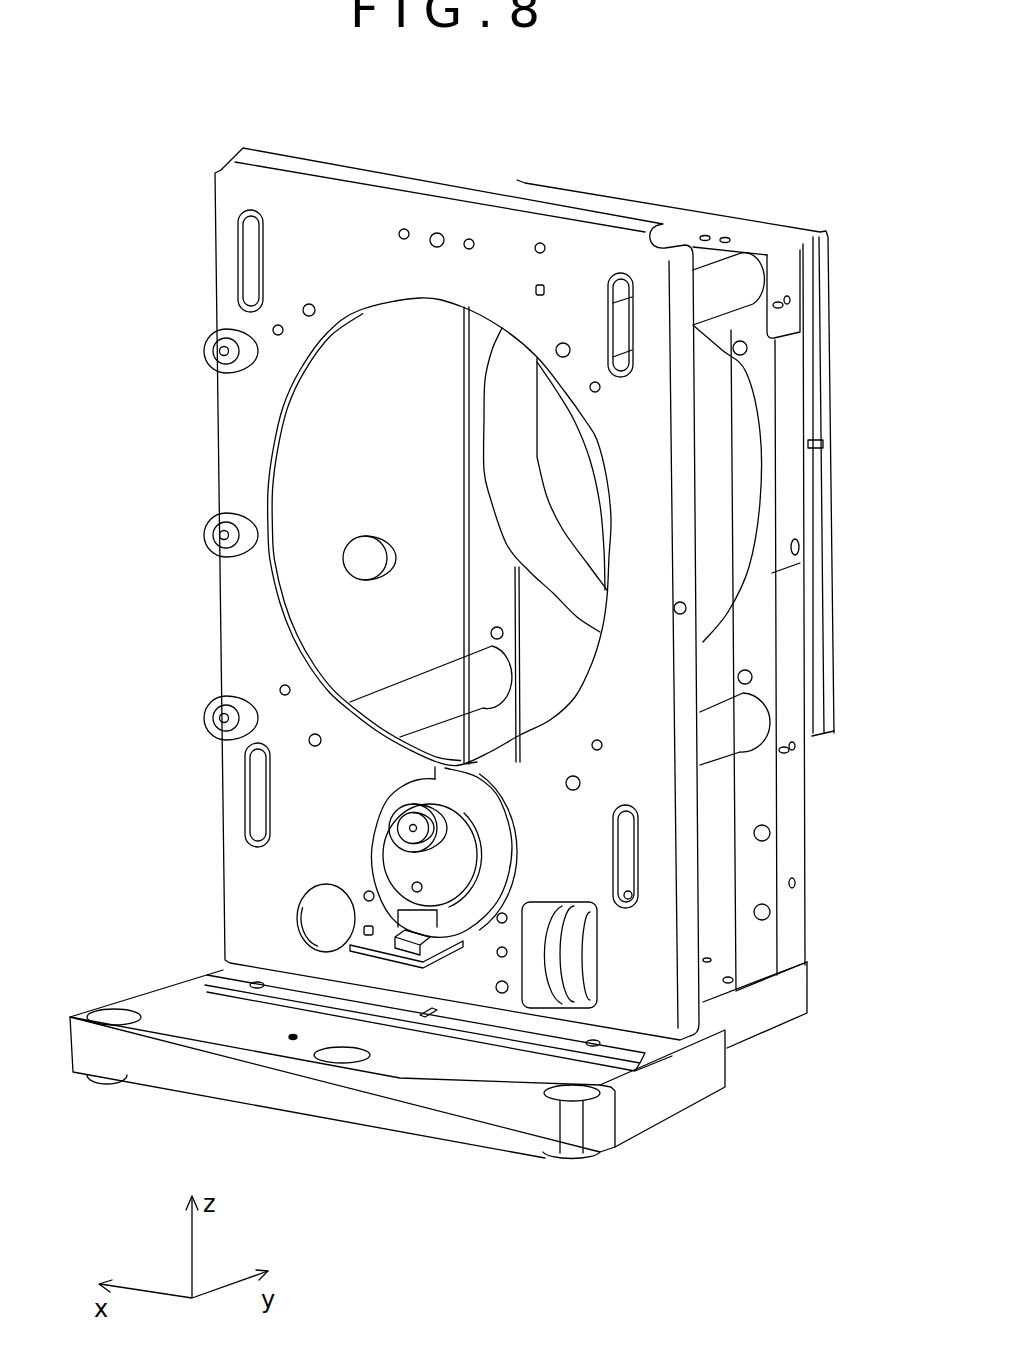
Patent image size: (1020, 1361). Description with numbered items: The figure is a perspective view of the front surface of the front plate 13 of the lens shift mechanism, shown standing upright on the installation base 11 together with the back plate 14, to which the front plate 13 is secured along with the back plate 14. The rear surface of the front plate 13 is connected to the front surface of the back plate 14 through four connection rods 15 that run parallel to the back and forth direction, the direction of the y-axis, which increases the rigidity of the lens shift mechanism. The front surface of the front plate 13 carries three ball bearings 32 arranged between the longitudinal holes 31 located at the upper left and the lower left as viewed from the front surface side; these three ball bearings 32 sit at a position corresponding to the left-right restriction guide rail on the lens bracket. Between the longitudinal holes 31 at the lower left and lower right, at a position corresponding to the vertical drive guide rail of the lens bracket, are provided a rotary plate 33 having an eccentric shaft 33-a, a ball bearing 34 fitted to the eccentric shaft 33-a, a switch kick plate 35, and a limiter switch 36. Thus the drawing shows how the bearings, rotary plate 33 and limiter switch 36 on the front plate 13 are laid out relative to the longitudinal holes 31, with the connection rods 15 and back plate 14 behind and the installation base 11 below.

The installation base 11 is at (660, 1088).
The front plate 13 is at (362, 197).
The back plate 14 is at (793, 842).
The connection rod 15 is at (744, 268).
The longitudinal hole 31 is at (257, 260).
The ball bearing 32 is at (218, 353).
The rotary plate 33 is at (403, 871).
The eccentric shaft 33-a is at (405, 830).
The ball bearing 34 is at (418, 848).
The switch kick plate 35 is at (474, 905).
The limiter switch 36 is at (404, 954).